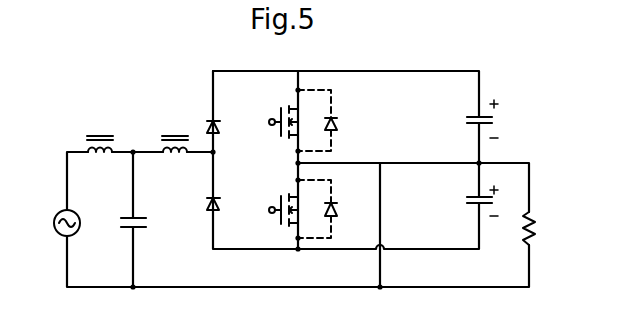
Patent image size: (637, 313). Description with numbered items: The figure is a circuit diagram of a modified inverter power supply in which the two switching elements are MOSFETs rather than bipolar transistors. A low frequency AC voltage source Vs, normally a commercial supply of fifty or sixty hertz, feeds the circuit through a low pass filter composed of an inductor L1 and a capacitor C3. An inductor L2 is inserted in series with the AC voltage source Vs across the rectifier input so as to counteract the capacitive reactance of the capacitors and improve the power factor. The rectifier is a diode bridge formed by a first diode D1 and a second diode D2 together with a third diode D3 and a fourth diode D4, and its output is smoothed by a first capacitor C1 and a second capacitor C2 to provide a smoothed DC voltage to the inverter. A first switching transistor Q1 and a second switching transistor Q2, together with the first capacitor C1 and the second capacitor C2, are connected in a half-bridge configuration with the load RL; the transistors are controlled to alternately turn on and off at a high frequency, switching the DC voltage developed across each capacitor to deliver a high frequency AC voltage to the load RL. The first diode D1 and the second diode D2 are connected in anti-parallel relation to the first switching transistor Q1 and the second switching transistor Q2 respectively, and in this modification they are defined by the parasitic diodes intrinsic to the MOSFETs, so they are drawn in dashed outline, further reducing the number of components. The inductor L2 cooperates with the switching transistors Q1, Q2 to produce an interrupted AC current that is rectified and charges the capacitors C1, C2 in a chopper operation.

The AC voltage source Vs is at (52, 226).
The inductor L1 is at (100, 129).
The inductor L2 is at (176, 129).
The capacitor C3 is at (123, 235).
The third diode D3 is at (232, 116).
The fourth diode D4 is at (232, 193).
The first switching transistor Q1 is at (276, 132).
The second switching transistor Q2 is at (276, 219).
The first diode D1 is at (336, 120).
The second diode D2 is at (336, 209).
The first capacitor C1 is at (466, 116).
The second capacitor C2 is at (466, 201).
The load RL is at (547, 221).